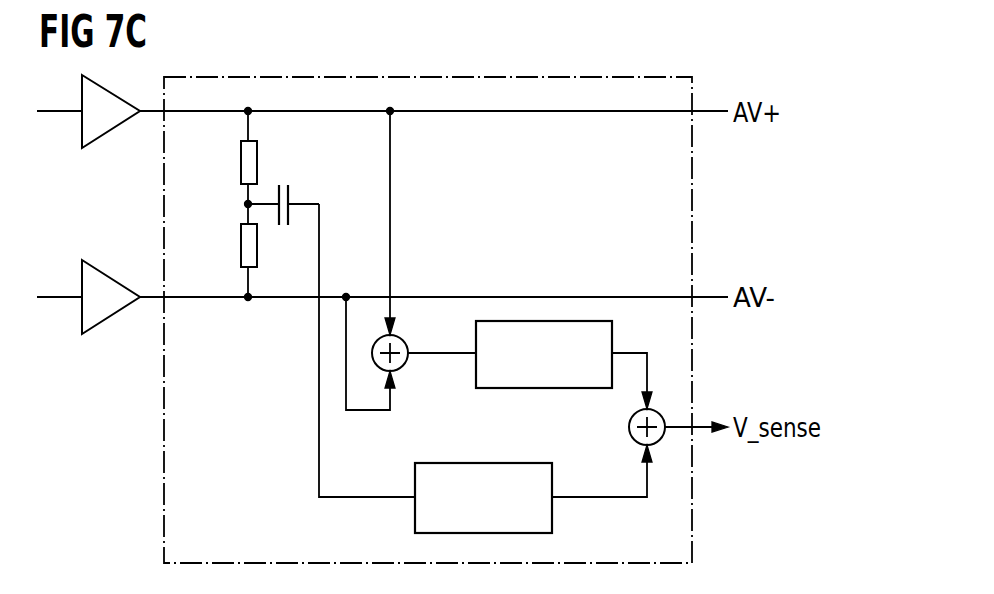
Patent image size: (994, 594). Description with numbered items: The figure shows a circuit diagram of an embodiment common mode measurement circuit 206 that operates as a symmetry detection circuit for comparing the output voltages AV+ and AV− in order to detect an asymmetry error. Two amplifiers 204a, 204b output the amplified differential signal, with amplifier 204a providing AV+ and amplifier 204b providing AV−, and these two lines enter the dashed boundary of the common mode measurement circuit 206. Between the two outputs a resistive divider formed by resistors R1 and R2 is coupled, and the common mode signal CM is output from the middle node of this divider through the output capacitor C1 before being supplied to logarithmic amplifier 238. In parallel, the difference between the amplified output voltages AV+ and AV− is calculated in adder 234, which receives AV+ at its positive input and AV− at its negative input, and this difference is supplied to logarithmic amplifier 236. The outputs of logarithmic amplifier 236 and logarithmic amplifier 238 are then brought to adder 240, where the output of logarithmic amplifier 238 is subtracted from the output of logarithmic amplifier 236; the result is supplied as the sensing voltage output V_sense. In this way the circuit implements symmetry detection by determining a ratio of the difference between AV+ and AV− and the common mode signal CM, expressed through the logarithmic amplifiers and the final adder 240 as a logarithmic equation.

The amplifier 204a is at (103, 135).
The amplifier 204b is at (102, 273).
The common mode measurement circuit 206 is at (692, 198).
The adder 234 is at (403, 366).
The logarithmic amplifier 236 is at (612, 337).
The logarithmic amplifier 238 is at (483, 463).
The adder 240 is at (629, 427).
The resistor R1 is at (241, 163).
The resistor R2 is at (241, 246).
The output capacitor C1 is at (291, 190).
The common mode signal CM is at (319, 398).